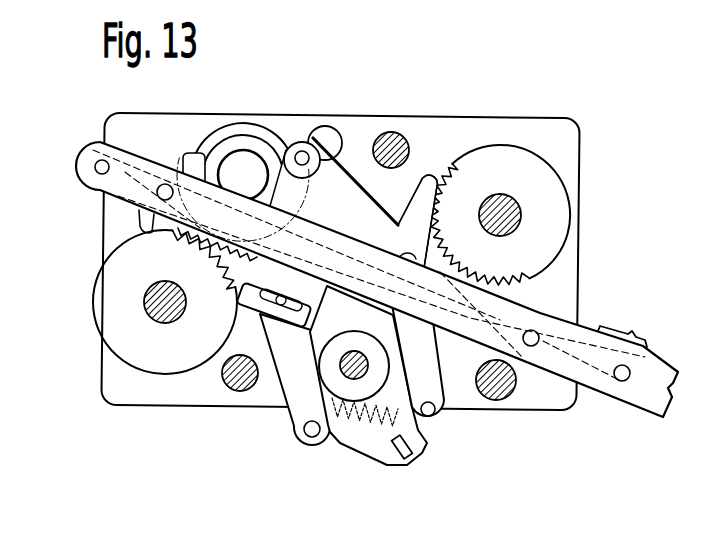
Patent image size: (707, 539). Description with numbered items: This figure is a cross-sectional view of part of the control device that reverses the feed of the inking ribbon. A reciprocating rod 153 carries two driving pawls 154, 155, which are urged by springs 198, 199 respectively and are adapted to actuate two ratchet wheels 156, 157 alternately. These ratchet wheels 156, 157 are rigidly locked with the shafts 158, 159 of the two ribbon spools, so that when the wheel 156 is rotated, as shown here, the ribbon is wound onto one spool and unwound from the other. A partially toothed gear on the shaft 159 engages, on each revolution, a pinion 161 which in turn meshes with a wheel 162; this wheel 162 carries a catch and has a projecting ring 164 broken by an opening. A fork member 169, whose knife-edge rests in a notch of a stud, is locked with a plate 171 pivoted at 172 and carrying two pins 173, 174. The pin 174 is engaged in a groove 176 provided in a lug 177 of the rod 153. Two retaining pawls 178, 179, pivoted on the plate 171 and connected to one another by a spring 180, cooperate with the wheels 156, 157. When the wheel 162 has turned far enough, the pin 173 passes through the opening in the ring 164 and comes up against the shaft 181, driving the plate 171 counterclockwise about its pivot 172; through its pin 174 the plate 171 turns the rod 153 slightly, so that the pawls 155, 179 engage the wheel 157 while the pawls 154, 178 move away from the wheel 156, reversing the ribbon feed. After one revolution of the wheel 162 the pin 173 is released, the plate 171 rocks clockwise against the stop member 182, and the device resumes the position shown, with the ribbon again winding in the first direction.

The rod 153 is at (648, 396).
The driving pawl 154 is at (447, 272).
The driving pawl 155 is at (193, 140).
The ratchet wheel 156 is at (548, 209).
The ratchet wheel 157 is at (108, 290).
The shaft 158 is at (500, 197).
The shaft 159 is at (167, 314).
The pinion 161 is at (140, 219).
The wheel 162 is at (222, 121).
The projecting ring 164 is at (255, 137).
The fork member 169 is at (411, 457).
The plate 171 is at (352, 172).
The pivot 172 is at (356, 377).
The pin 173 is at (304, 155).
The pin 174 is at (281, 296).
The groove 176 is at (285, 288).
The lug 177 is at (319, 293).
The retaining pawl 178 is at (427, 372).
The retaining pawl 179 is at (293, 381).
The spring 180 is at (384, 410).
The shaft 181 is at (246, 182).
The stop member 182 is at (336, 143).
The spring 198 is at (592, 330).
The spring 199 is at (100, 152).